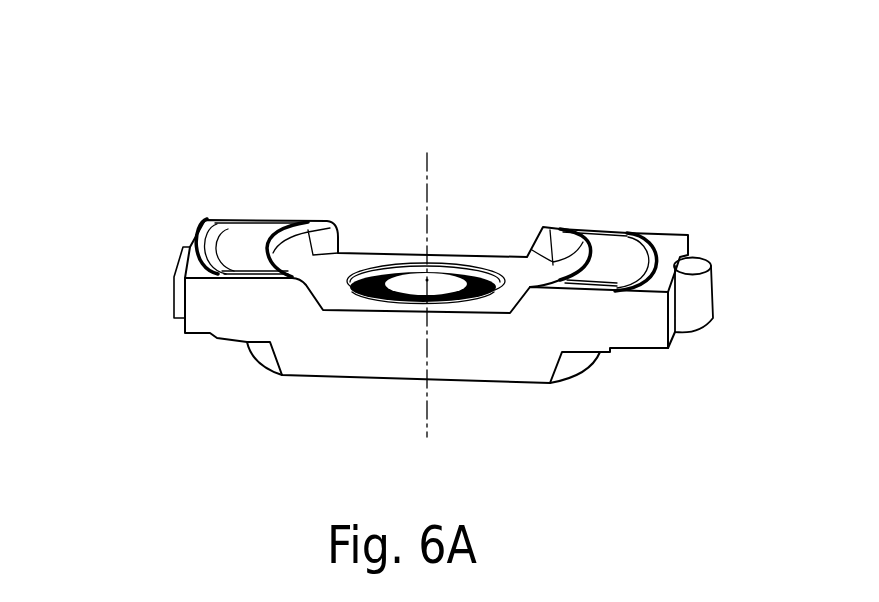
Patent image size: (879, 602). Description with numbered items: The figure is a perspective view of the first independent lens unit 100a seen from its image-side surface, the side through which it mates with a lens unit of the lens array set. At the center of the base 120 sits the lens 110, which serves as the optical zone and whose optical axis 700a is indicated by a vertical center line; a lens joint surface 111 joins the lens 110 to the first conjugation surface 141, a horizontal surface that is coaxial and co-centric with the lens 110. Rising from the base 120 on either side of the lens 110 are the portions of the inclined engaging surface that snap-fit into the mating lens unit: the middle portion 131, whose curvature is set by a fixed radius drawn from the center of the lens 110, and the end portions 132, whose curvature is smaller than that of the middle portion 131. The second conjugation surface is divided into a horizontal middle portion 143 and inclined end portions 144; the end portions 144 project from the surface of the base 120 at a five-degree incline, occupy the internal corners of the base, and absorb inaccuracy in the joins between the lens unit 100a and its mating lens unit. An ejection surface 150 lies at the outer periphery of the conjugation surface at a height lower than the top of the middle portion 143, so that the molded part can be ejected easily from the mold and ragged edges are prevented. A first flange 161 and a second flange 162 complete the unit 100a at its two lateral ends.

The first independent lens unit 100a is at (108, 34).
The lens 110 is at (440, 290).
The lens joint surface 111 is at (473, 303).
The base 120 is at (148, 213).
The middle portion of the engaging surface 131 is at (565, 257).
The end portion of the engaging surface 132 is at (545, 250).
The first conjugation surface 141 is at (347, 263).
The horizontal middle portion of the second conjugation surface 143 is at (253, 237).
The inclined end portion of the second conjugation surface 144 is at (237, 273).
The ejection surface 150 is at (668, 263).
The first flange 161 is at (698, 313).
The second flange 162 is at (177, 313).
The optical axis 700a is at (433, 275).